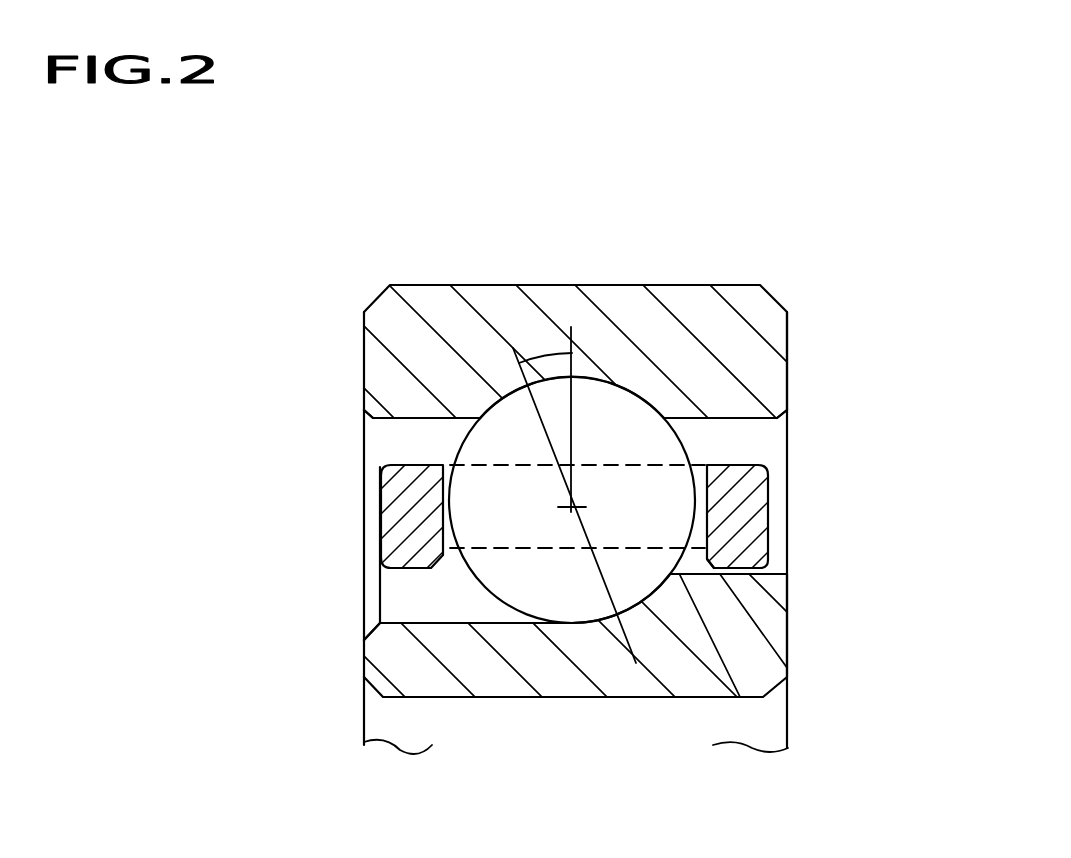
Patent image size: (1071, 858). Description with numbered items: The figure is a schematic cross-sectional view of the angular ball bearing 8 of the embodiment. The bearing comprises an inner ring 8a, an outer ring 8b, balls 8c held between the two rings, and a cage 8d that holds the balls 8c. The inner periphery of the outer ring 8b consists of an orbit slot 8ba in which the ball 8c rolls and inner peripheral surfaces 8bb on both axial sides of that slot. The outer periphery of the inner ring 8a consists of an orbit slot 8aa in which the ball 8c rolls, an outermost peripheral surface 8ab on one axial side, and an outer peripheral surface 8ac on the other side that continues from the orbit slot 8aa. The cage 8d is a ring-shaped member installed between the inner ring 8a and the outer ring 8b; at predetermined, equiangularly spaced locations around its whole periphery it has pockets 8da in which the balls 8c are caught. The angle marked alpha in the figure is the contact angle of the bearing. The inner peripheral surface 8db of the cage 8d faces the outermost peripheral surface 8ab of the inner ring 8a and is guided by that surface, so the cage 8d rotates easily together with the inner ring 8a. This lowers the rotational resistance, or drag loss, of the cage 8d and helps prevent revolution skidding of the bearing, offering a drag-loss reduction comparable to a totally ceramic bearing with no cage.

The angular ball bearing 8 is at (337, 300).
The inner ring 8a is at (672, 662).
The orbit slot 8aa is at (583, 627).
The outermost peripheral surface 8ab is at (703, 577).
The outer peripheral surface 8ac is at (463, 627).
The outer ring 8b is at (752, 333).
The orbit slot 8ba is at (640, 393).
The inner peripheral surfaces 8bb is at (412, 418).
The ball 8c is at (512, 573).
The cage 8d is at (757, 513).
The pocket 8da is at (437, 527).
The inner peripheral surface 8db is at (740, 563).